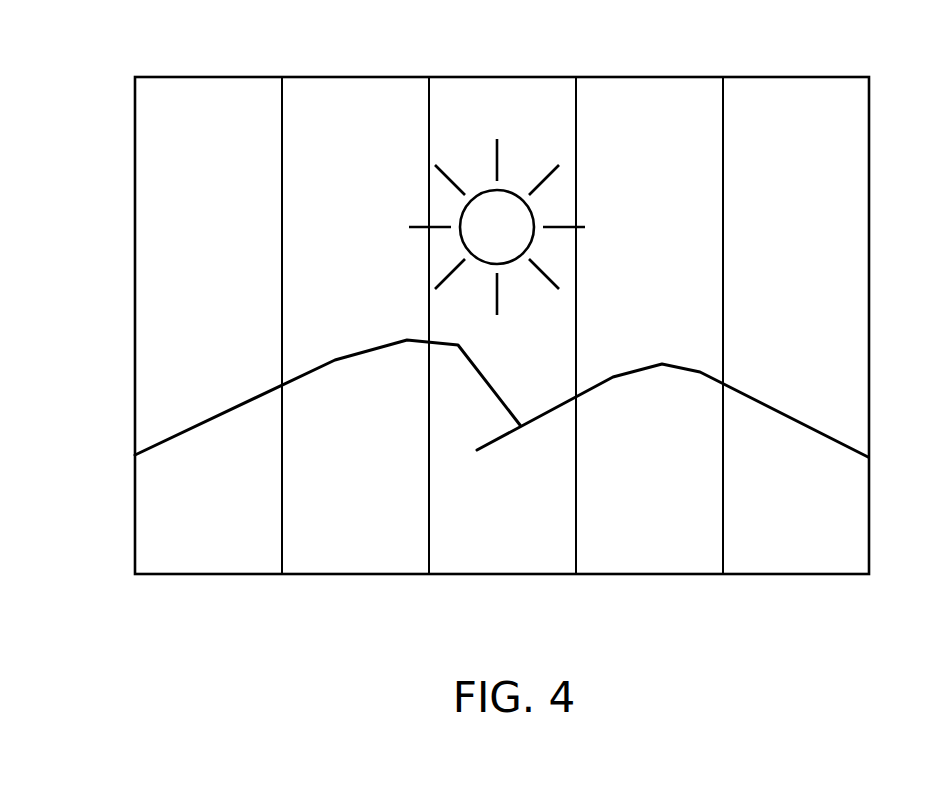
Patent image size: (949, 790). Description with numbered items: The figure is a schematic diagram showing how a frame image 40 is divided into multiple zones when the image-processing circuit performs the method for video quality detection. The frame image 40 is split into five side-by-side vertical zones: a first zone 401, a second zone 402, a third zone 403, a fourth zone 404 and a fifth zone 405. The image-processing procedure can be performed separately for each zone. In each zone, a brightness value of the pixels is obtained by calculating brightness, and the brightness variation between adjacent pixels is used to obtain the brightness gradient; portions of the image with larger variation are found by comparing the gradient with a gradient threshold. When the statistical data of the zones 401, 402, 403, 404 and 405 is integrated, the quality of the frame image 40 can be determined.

The frame image 40 is at (939, 59).
The first zone 401 is at (219, 561).
The second zone 402 is at (366, 561).
The third zone 403 is at (512, 561).
The fourth zone 404 is at (660, 561).
The fifth zone 405 is at (807, 561).